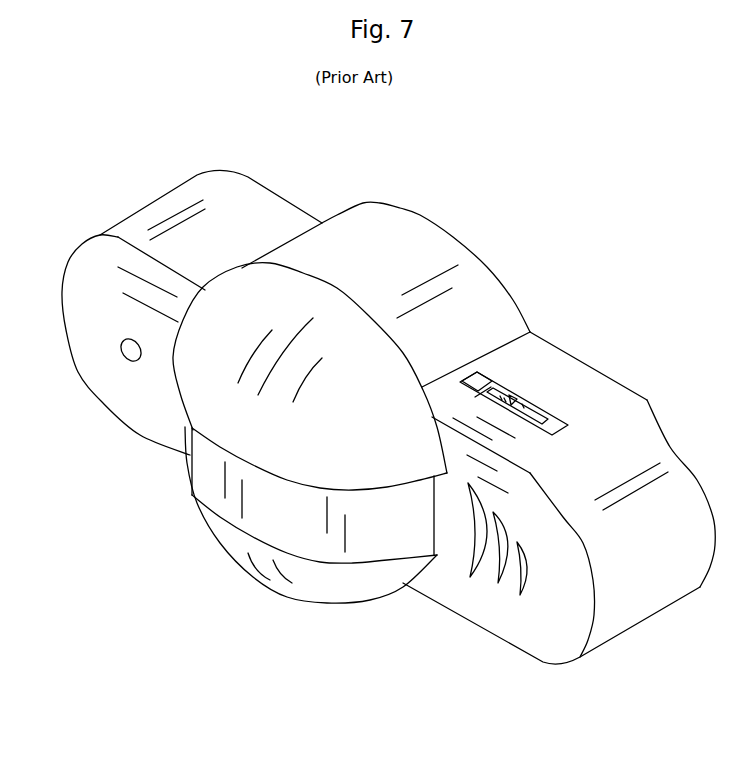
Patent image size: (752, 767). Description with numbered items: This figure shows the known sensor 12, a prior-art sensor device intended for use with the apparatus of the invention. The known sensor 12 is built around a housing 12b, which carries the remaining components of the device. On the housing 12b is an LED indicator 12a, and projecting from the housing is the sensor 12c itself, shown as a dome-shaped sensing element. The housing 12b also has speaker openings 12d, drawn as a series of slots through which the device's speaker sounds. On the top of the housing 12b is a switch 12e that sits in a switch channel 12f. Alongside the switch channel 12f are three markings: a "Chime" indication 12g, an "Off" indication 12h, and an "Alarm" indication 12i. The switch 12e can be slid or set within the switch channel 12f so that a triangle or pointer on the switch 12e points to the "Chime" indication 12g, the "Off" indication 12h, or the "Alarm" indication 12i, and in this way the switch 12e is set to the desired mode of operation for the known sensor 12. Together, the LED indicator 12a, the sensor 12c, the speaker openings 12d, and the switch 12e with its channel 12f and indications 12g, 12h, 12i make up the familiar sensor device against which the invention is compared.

The known sensor 12 is at (502, 258).
The LED indicator 12a is at (127, 362).
The housing 12b is at (238, 218).
The sensor 12c is at (278, 519).
The speaker openings 12d is at (496, 577).
The switch 12e is at (538, 402).
The switch channel 12f is at (533, 348).
The "Chime" indication 12g is at (485, 381).
The "Off" indication 12h is at (553, 375).
The "Alarm" indication 12i is at (601, 385).